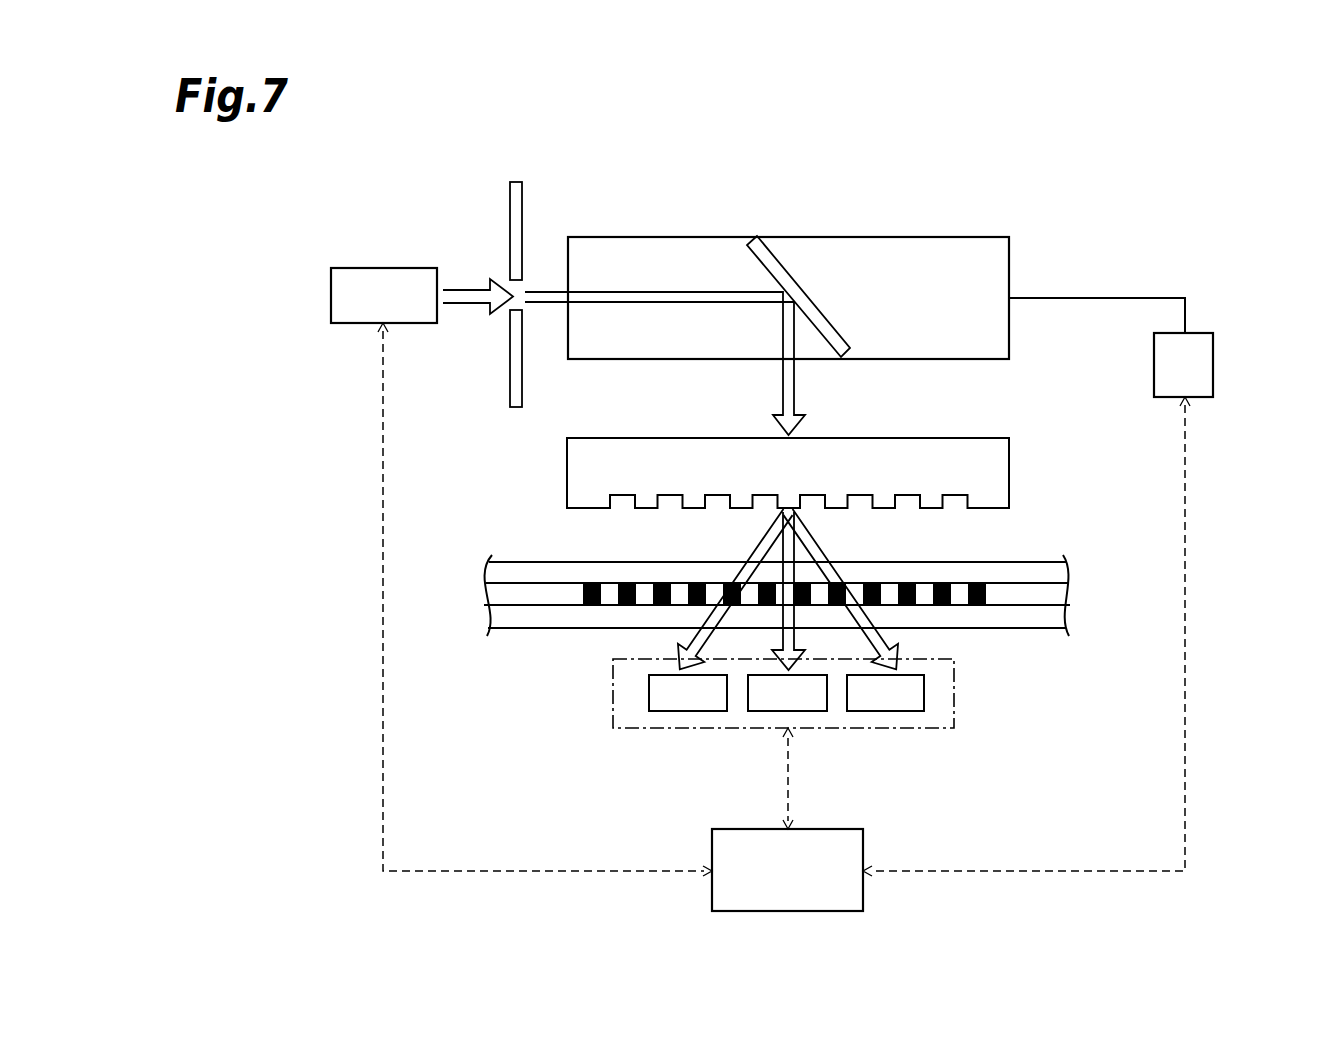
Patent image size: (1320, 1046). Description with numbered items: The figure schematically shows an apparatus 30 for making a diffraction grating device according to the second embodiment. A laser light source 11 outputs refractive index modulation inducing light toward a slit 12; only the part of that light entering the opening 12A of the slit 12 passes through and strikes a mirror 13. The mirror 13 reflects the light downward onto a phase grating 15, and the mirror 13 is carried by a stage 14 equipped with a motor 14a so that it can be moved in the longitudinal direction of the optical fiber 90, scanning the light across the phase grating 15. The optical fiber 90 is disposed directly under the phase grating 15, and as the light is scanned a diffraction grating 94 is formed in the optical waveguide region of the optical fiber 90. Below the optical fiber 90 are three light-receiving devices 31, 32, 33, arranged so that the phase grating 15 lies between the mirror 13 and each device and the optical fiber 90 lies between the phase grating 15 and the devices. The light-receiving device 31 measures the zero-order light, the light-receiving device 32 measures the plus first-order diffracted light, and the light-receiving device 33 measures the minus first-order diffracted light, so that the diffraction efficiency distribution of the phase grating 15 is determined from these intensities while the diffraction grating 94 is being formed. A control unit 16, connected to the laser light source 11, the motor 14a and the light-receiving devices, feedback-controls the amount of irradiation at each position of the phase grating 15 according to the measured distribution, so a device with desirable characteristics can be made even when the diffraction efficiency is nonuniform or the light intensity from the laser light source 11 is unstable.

The laser light source 11 is at (388, 275).
The slit 12 is at (516, 182).
The opening of the slit 12A is at (510, 290).
The mirror 13 is at (785, 265).
The stage 14 is at (865, 237).
The motor 14a is at (1203, 368).
The phase grating 15 is at (1000, 470).
The control unit 16 is at (852, 894).
The apparatus for making a diffraction grating device 30 is at (1026, 200).
The light-receiving device 31 is at (767, 712).
The light-receiving device 32 is at (685, 712).
The light-receiving device 33 is at (889, 712).
The optical fiber 90 is at (1020, 570).
The diffraction grating 94 is at (982, 553).